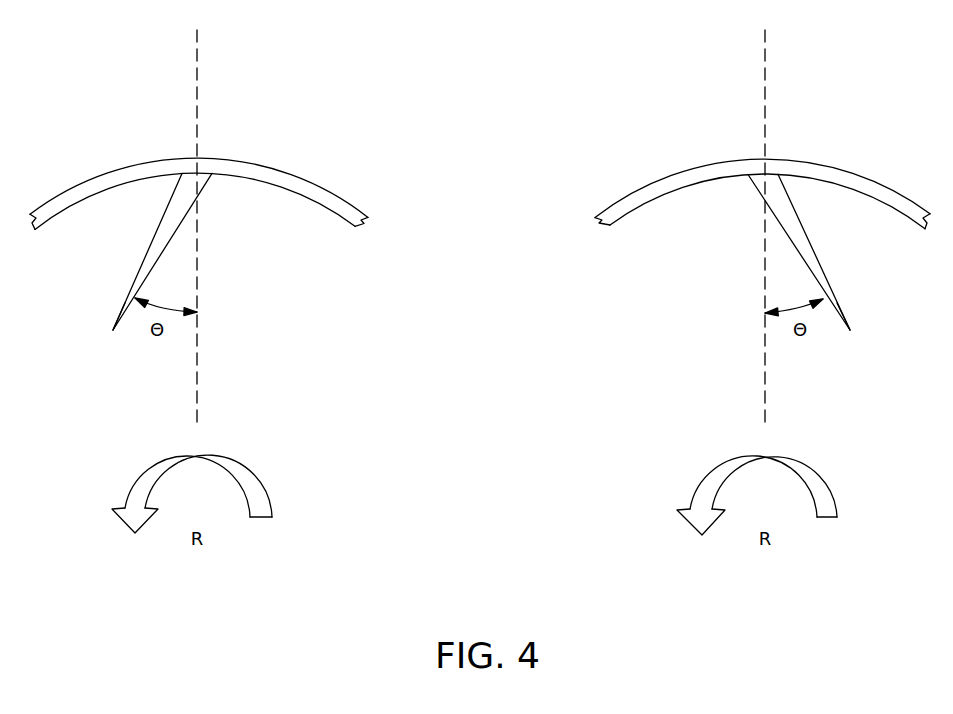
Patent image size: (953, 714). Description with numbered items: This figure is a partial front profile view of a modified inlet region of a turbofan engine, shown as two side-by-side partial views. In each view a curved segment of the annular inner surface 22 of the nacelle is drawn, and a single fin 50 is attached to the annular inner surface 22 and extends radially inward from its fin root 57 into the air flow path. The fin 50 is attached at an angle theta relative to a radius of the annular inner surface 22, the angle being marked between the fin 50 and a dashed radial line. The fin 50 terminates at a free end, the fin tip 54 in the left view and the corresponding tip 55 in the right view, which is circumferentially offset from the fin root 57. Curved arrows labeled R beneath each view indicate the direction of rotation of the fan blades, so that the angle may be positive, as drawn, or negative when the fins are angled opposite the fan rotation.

The annular inner surface 22 is at (318, 203).
The fin 50 is at (153, 237).
The fin root 57 is at (198, 173).
The fin tip 54 is at (113, 330).
The tool tip (second orientation) 55 is at (850, 330).